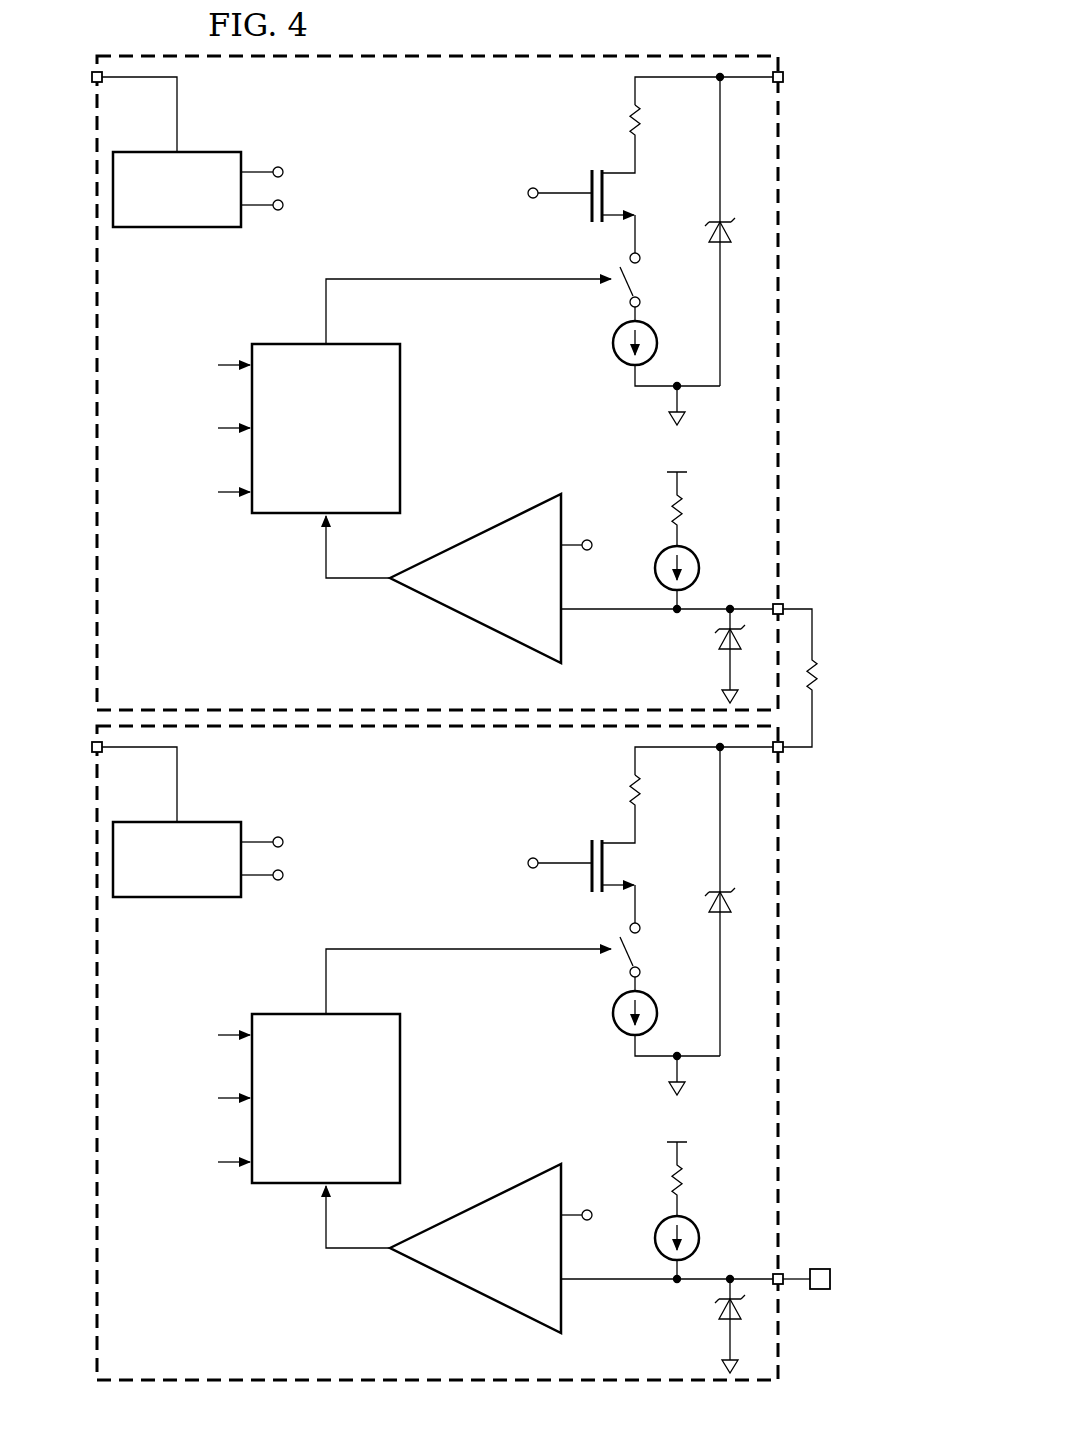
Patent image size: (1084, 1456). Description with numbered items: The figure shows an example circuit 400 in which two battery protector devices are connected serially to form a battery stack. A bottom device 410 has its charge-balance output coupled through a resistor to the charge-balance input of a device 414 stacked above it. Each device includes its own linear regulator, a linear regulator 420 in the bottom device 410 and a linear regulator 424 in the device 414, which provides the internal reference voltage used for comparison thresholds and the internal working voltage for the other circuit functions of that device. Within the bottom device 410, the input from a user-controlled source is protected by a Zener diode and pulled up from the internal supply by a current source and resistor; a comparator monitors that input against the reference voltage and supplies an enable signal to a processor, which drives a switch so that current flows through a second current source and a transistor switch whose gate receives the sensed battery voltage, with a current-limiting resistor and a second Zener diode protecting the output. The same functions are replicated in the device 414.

The circuit 400 is at (845, 145).
The device 414 is at (784, 290).
The bottom device 410 is at (784, 1092).
The linear regulator 424 is at (147, 228).
The linear regulator 420 is at (177, 887).